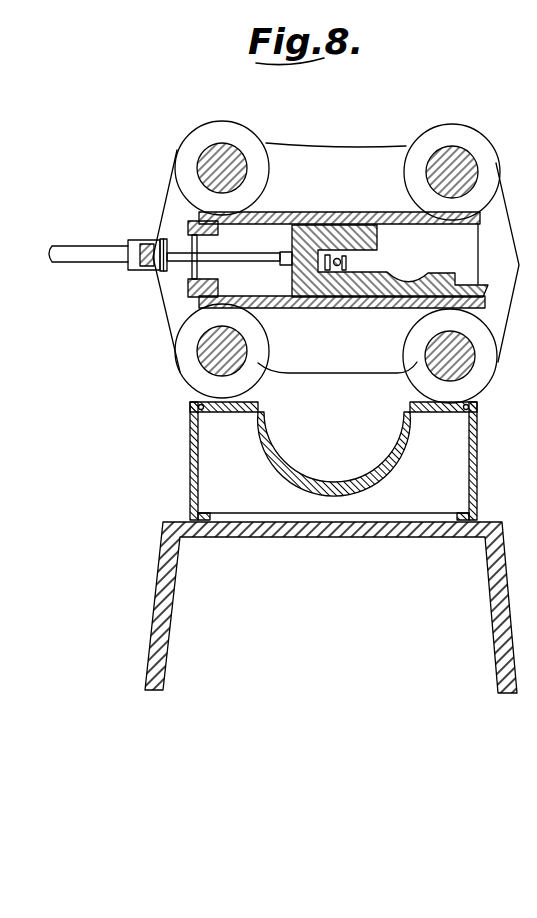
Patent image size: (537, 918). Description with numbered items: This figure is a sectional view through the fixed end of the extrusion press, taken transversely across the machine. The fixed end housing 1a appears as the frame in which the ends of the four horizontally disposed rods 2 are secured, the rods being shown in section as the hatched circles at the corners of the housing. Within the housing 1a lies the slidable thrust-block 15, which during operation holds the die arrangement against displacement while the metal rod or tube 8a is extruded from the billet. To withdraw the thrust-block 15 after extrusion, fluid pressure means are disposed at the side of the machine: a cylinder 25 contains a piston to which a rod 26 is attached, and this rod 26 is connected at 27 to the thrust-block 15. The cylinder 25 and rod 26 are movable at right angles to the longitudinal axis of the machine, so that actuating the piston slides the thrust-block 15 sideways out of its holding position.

The end housing 1a is at (334, 156).
The rods 2 is at (214, 166).
The thrust-block 15 is at (292, 282).
The extruded rod or tube 8a is at (348, 261).
The cylinder 25 is at (87, 252).
The rod 26 is at (216, 263).
The connection 27 is at (266, 257).